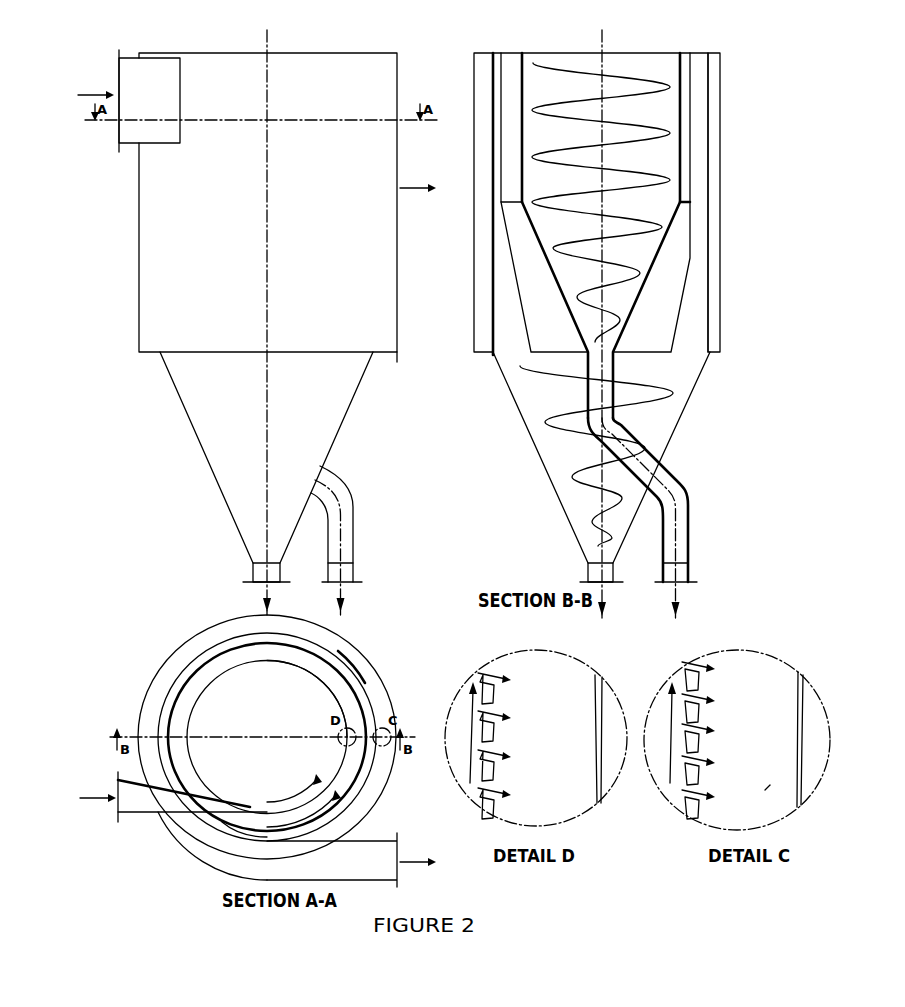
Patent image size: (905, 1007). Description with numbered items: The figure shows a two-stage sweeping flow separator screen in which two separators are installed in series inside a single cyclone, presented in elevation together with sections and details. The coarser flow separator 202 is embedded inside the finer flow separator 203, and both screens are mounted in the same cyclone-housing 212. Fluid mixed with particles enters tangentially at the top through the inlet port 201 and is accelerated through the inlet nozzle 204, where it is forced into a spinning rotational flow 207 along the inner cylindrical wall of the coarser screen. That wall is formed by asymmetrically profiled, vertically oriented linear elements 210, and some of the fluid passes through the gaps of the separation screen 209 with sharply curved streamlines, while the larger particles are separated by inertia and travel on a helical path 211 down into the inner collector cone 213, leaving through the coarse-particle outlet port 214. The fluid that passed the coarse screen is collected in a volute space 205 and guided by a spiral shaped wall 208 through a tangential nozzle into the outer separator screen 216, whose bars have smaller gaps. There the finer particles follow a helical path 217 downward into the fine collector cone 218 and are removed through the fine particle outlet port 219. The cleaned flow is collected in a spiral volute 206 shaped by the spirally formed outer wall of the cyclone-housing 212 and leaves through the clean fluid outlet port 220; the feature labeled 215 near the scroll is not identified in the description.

The inlet port 201 is at (116, 138).
The coarser flow separator 202 is at (326, 688).
The finer flow separator 203 is at (365, 682).
The inlet nozzle 204 is at (217, 804).
The volute space 205 is at (512, 119).
The spiral volute 206 is at (484, 313).
The spinning rotational flow 207 is at (303, 786).
The spiral shaped wall 208 is at (692, 122).
The gaps of the separation screen 209 is at (497, 708).
The linear elements 210 is at (502, 773).
The helical path 211 is at (587, 168).
The cyclone-housing 212 is at (139, 265).
The inner collector cone 213 is at (563, 298).
The coarse-particle outlet port 214 is at (333, 584).
The scroll outlet channel 215 is at (258, 828).
The outer separator screen 216 is at (703, 185).
The helical path 217 is at (570, 377).
The fine collector cone 218 is at (180, 398).
The fine particle outlet port 219 is at (253, 571).
The clean fluid outlet port 220 is at (398, 213).